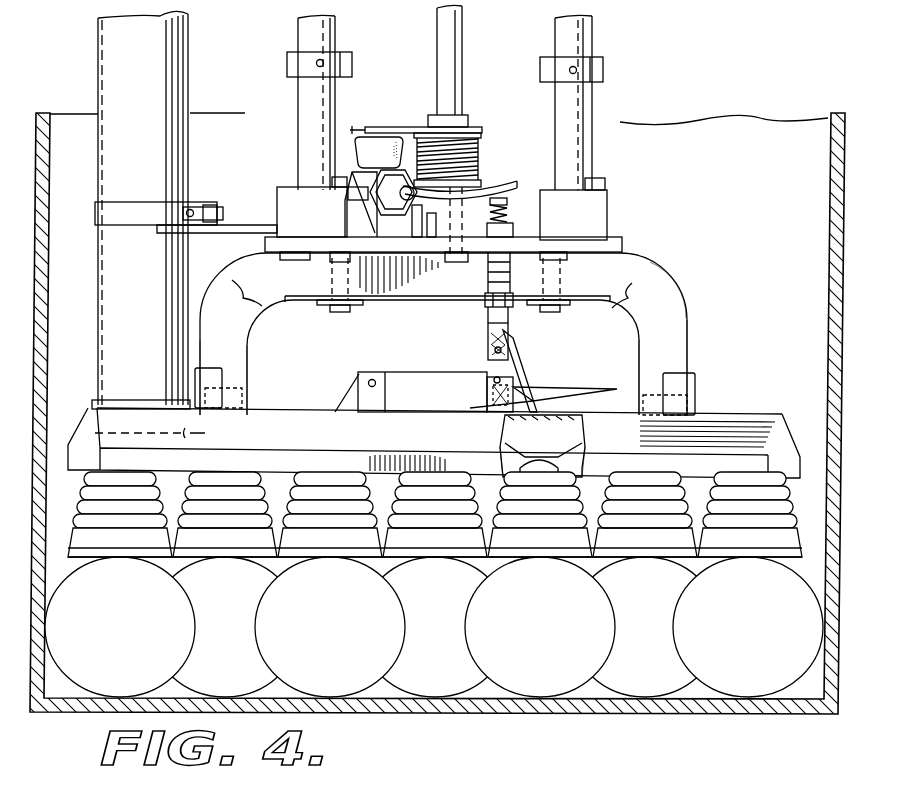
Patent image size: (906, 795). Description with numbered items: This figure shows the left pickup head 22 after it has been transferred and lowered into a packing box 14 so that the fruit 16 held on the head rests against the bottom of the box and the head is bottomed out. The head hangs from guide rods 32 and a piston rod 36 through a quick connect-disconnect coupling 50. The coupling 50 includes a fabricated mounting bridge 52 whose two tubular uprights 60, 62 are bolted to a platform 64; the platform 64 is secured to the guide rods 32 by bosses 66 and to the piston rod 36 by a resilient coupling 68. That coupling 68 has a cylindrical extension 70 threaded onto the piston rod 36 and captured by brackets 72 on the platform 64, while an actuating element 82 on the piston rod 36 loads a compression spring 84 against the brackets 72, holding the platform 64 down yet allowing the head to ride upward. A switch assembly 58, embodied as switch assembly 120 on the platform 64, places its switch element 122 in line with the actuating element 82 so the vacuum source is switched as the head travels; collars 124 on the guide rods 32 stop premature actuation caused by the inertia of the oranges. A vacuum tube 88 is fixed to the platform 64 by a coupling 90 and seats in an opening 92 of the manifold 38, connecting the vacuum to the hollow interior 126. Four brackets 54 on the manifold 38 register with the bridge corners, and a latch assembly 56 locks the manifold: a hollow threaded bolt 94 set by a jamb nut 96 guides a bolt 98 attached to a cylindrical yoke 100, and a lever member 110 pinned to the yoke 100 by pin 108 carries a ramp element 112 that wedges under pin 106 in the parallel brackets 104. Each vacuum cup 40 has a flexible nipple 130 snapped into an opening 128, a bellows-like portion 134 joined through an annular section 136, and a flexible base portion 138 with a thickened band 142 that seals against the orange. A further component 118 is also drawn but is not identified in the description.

The box 14 is at (620, 714).
The fruit 16 is at (80, 680).
The left pickup head 22 is at (470, 297).
The guide rods 32 is at (298, 33).
The piston rod 36 is at (462, 33).
The manifold 38 is at (758, 414).
The vacuum cups 40 is at (131, 566).
The quick connect-disconnect coupling 50 is at (683, 272).
The mounting bridge 52 is at (674, 295).
The brackets 54 is at (195, 380).
The latch assembly 56 is at (476, 337).
The switch assembly 58 is at (376, 106).
The tubular upright 60 is at (296, 297).
The tubular upright 62 is at (247, 355).
The platform 64 is at (622, 245).
The bosses 66 is at (277, 203).
The resilient coupling 68 is at (497, 160).
The cylindrical extension 70 is at (481, 174).
The brackets 72 is at (472, 240).
The actuating element 82 is at (390, 126).
The compression spring 84 is at (483, 140).
The tube 88 is at (98, 71).
The coupling 90 is at (197, 213).
The opening 92 is at (169, 434).
The hollow threaded bolt 94 is at (485, 296).
The jamb nut 96 is at (513, 231).
The bolt 98 is at (507, 204).
The cylindrical yoke 100 is at (510, 316).
The brackets 104 is at (405, 378).
The pin 106 is at (485, 350).
The pin 108 is at (479, 398).
The lever member 110 is at (528, 358).
The ramp element 112 is at (573, 388).
The lever arm 118 is at (350, 384).
The switch assembly 120 is at (348, 153).
The switch element 122 is at (350, 128).
The collars 124 is at (287, 63).
The hollow interior 126 is at (542, 446).
The openings 128 is at (503, 452).
The flexible nipple 130 is at (584, 453).
The bellows-like portion 134 is at (485, 530).
The annular section 136 is at (583, 466).
The flexible base portion 138 is at (588, 545).
The band 142 is at (560, 560).